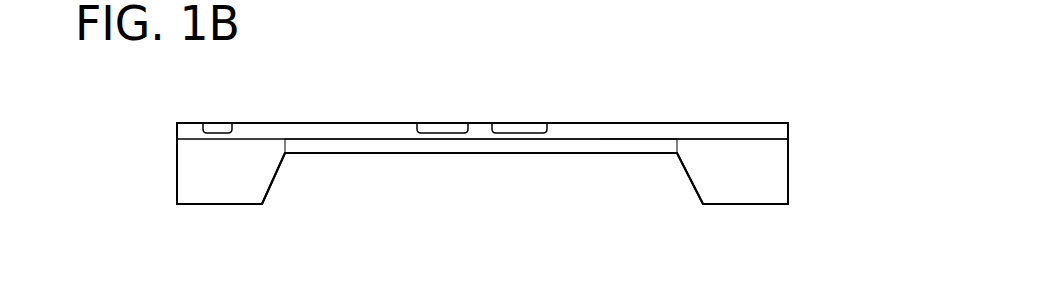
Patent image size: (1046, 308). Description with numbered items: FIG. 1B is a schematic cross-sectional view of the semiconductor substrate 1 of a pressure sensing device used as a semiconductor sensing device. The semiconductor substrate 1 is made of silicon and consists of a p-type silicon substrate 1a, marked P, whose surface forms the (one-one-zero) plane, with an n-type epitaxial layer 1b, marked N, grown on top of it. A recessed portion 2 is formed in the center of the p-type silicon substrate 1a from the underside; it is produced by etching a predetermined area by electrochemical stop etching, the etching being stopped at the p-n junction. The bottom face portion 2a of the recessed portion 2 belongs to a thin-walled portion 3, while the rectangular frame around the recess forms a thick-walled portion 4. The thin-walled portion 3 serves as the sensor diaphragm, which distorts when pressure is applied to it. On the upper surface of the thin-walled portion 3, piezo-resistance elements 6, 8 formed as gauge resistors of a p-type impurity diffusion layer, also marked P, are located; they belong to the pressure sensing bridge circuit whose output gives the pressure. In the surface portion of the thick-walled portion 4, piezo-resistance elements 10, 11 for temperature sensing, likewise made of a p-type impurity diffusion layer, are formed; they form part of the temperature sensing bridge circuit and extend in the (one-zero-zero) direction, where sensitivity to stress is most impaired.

The semiconductor substrate 1 is at (778, 167).
The p-type silicon substrate 1a is at (775, 193).
The n-type epitaxial layer 1b is at (775, 132).
The recessed portion 2 is at (688, 174).
The bottom face portion 2a is at (563, 153).
The thin-walled portion 3 is at (435, 153).
The thick-walled portion 4 is at (747, 192).
The piezo-resistance element 6 is at (523, 124).
The piezo-resistance element 8 is at (442, 130).
The piezo-resistance element for temperature sensing 10 is at (231, 188).
The piezo-resistance element for temperature sensing 11 is at (212, 133).
The n-type region N is at (725, 134).
The p-type region P is at (213, 127).